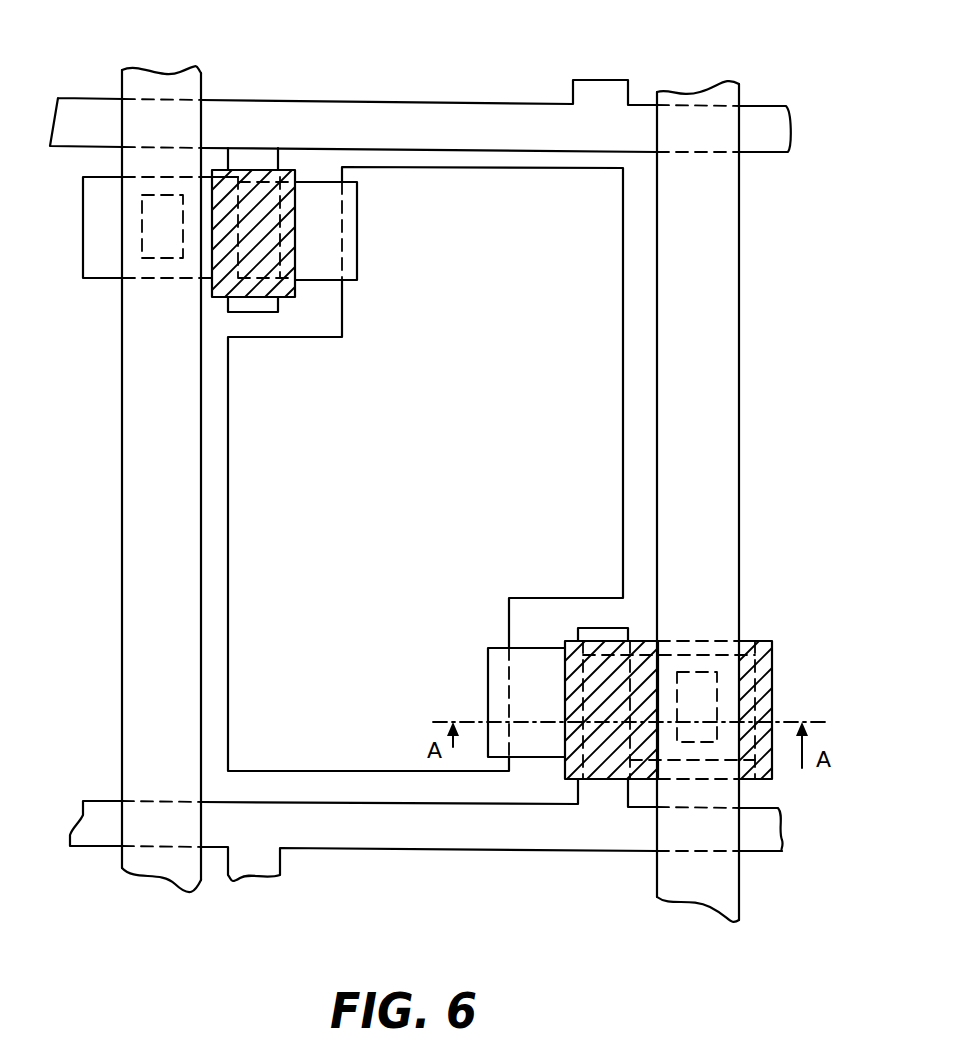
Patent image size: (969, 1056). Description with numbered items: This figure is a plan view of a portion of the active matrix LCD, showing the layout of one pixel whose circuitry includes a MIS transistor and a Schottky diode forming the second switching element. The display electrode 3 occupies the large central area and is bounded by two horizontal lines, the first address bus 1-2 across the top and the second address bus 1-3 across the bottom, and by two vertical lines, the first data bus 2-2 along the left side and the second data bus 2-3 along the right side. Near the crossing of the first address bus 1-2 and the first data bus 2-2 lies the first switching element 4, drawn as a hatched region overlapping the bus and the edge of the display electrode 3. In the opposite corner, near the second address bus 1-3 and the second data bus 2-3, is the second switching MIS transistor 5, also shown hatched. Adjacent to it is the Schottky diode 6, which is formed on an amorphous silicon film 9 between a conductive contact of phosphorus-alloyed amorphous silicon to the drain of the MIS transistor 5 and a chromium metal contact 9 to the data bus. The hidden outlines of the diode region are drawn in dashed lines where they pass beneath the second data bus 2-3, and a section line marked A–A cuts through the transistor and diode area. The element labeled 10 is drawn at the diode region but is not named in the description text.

The first address bus 1-2 is at (601, 98).
The second address bus 1-3 is at (100, 820).
The first data bus 2-2 is at (147, 543).
The second data bus 2-3 is at (720, 303).
The display electrode 3 is at (578, 375).
The first switching element 4 is at (257, 190).
The second switching MIS transistor 5 is at (607, 673).
The Schottky diode 6 is at (697, 697).
The amorphous silicon film 9 is at (772, 653).
The drain electrode 10 is at (718, 728).